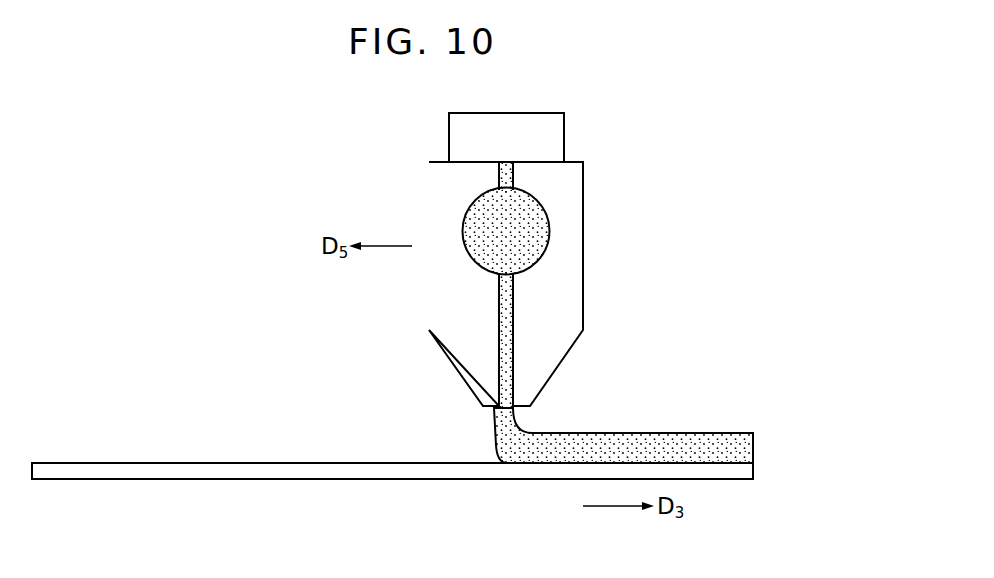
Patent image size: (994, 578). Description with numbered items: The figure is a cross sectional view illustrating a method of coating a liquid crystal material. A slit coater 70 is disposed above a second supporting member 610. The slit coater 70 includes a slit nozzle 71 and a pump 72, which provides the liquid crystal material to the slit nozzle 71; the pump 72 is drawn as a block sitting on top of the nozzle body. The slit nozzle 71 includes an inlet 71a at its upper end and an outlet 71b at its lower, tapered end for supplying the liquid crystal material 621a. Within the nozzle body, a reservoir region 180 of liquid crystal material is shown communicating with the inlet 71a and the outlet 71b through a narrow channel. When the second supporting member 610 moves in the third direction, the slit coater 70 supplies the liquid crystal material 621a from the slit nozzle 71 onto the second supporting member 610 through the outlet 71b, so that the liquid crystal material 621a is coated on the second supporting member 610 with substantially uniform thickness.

The slit coater 70 is at (554, 259).
The slit nozzle 71 is at (536, 284).
The pump 72 is at (553, 138).
The inlet 71a is at (498, 183).
The outlet 71b is at (512, 408).
The solution / ink reservoir 180 is at (530, 232).
The liquid crystal material 621a is at (750, 445).
The second supporting member 610 is at (750, 473).